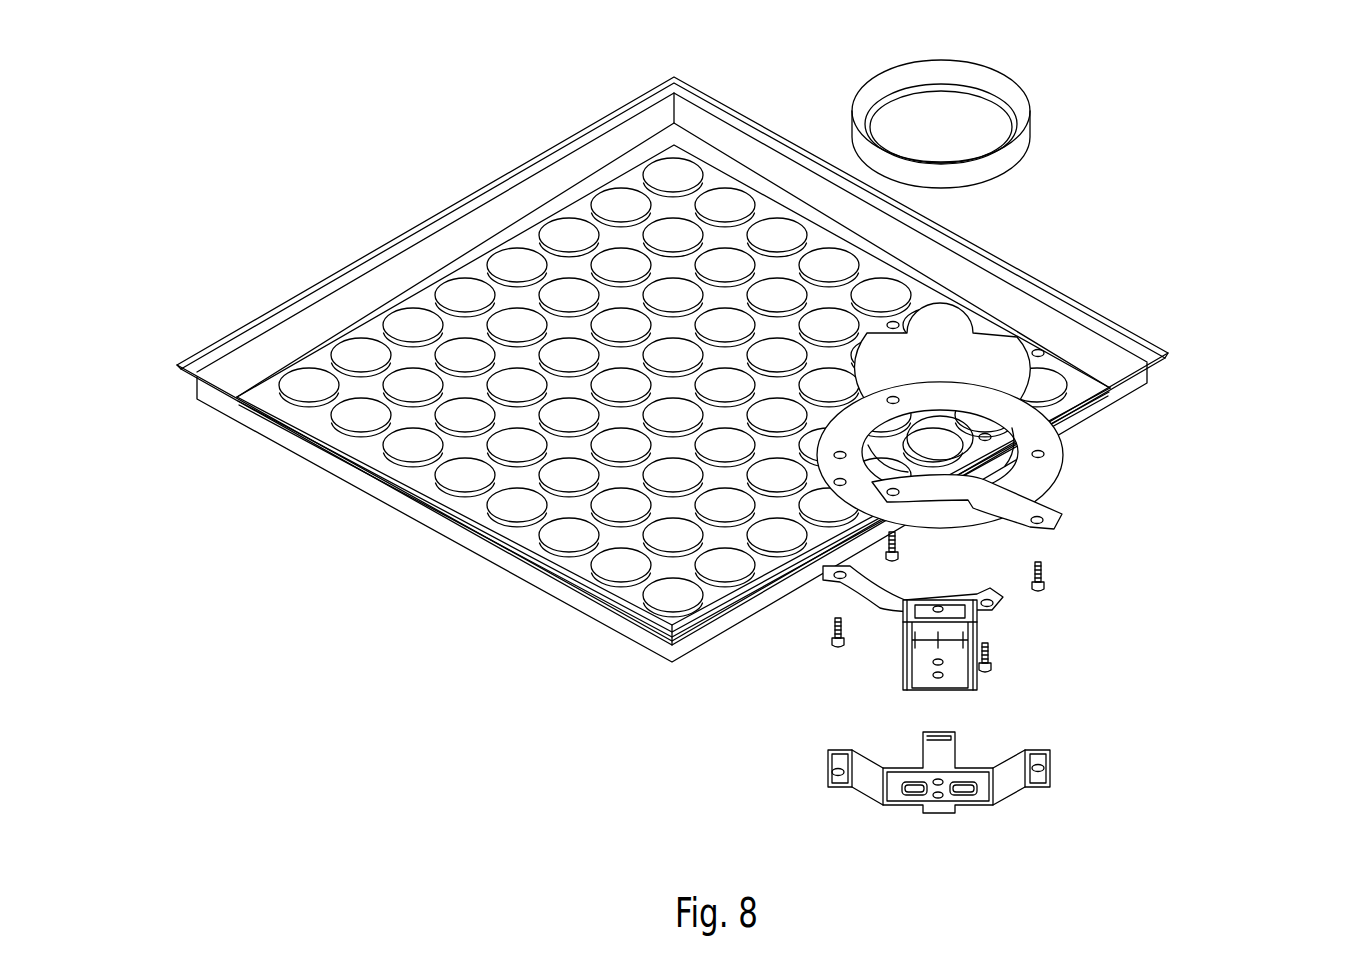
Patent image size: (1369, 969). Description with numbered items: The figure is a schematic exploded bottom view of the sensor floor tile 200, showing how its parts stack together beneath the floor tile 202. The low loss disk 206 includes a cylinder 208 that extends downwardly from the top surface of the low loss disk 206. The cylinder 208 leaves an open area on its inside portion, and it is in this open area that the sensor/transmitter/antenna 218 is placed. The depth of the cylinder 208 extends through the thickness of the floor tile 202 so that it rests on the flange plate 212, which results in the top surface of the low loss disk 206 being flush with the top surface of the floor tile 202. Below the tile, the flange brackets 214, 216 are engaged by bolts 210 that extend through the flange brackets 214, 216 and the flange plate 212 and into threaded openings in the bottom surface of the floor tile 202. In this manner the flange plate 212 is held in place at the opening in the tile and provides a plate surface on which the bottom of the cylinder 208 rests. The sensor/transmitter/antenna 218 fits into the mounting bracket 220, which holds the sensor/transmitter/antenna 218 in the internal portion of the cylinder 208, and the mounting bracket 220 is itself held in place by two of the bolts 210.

The sensor floor tile 200 is at (302, 141).
The floor tile 202 is at (1098, 304).
The low loss disk 206 is at (1075, 63).
The cylinder 208 is at (1020, 162).
The bolts 210 is at (1070, 594).
The flange plate 212 is at (1063, 453).
The flange bracket 214 is at (1058, 527).
The flange bracket 216 is at (833, 600).
The sensor/transmitter/antenna 218 is at (975, 687).
The mounting bracket 220 is at (1050, 780).